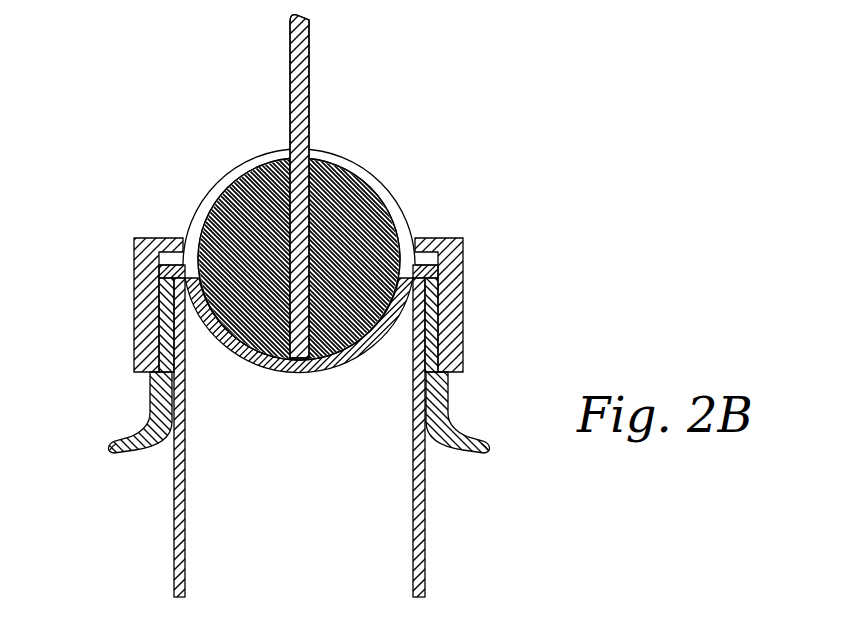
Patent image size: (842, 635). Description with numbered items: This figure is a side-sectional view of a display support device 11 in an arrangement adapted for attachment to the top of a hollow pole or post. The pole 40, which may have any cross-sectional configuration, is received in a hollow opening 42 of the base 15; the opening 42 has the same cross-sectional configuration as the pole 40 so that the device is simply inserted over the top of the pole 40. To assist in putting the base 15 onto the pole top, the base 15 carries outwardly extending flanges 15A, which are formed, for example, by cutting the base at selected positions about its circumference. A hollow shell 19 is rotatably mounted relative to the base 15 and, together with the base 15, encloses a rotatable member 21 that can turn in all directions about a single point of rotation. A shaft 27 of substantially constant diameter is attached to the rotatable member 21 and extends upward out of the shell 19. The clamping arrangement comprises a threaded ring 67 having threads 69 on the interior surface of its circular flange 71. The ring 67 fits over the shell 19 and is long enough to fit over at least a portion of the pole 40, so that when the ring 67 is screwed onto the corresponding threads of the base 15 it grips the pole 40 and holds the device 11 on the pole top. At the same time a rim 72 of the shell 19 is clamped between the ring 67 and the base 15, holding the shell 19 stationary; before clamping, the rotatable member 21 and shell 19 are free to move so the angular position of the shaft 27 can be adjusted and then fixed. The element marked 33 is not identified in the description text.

The display support device 11 is at (500, 220).
The base 15 is at (450, 405).
The outwardly extending flanges 15A is at (125, 450).
The hollow shell 19 is at (400, 240).
The rotatable member 21 is at (230, 190).
The shaft 27 is at (309, 58).
The ball surface 33 is at (362, 172).
The pole 40 is at (426, 553).
The hollow opening 42 is at (152, 400).
The threaded ring 67 is at (480, 292).
The threads 69 is at (440, 357).
The circular flange 71 is at (134, 330).
The rim 72 is at (168, 258).